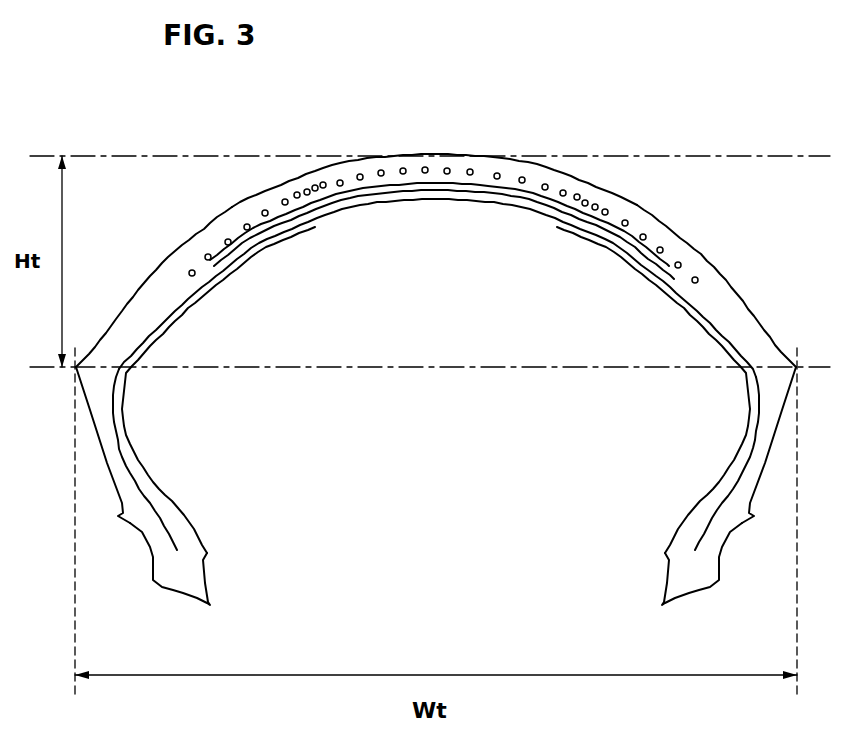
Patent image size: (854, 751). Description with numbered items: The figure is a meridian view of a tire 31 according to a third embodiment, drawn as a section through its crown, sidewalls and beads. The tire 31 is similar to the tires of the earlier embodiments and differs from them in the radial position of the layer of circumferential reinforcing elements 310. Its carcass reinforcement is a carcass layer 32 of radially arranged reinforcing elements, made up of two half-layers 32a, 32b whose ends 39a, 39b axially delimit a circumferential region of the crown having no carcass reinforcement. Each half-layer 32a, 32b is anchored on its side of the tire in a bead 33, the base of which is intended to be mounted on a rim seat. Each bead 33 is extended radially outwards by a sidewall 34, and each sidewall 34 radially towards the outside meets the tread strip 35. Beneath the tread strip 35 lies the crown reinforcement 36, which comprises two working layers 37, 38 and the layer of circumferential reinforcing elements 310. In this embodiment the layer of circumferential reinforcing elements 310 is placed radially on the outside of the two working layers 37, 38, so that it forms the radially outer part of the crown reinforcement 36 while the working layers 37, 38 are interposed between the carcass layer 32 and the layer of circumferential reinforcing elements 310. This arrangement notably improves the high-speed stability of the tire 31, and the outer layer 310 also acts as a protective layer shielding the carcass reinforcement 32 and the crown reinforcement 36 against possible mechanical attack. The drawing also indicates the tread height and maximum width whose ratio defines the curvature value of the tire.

The tire 31 is at (542, 126).
The carcass layer 32 is at (126, 412).
The half-layer 32a is at (148, 497).
The half-layer 32b is at (722, 503).
The bead 33 is at (190, 570).
The sidewall 34 is at (100, 425).
The tread strip 35 is at (292, 178).
The crown reinforcement 36 is at (668, 227).
The working layer 37 is at (220, 252).
The working layer 38 is at (612, 226).
The end of half-layer 39a is at (315, 216).
The end of half-layer 39b is at (580, 222).
The layer of circumferential reinforcing elements 310 is at (195, 276).